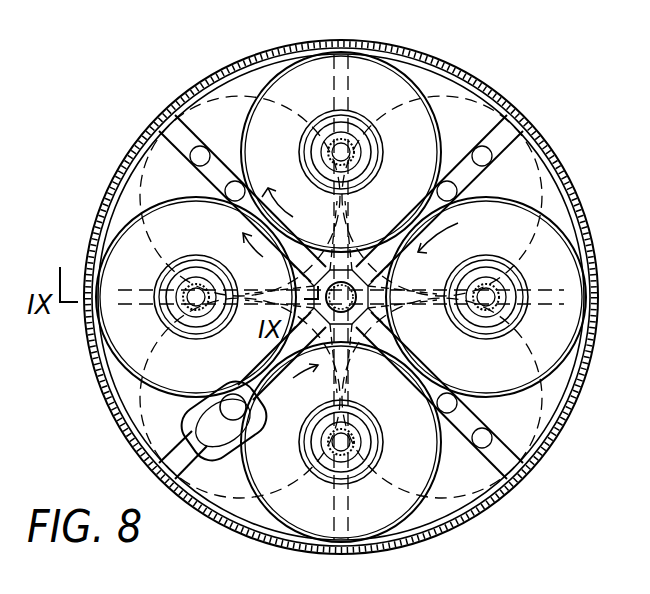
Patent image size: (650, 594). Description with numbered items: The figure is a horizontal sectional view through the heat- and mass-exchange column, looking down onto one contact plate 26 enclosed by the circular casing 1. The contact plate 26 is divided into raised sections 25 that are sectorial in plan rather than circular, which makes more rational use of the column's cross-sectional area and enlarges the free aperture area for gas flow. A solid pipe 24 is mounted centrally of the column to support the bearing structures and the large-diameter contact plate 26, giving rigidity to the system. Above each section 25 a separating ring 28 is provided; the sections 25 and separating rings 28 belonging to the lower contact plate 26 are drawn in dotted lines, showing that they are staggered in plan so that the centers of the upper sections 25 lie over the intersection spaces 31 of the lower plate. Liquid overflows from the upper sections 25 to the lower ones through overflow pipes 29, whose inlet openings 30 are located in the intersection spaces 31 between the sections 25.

The casing 1 is at (124, 155).
The solid pipe 24 is at (388, 322).
The sections 25 is at (224, 185).
The contact plate 26 is at (555, 208).
The separating ring 28 is at (140, 420).
The overflow pipes 29 is at (199, 328).
The inlet openings 30 is at (196, 423).
The intersection spaces 31 is at (166, 470).